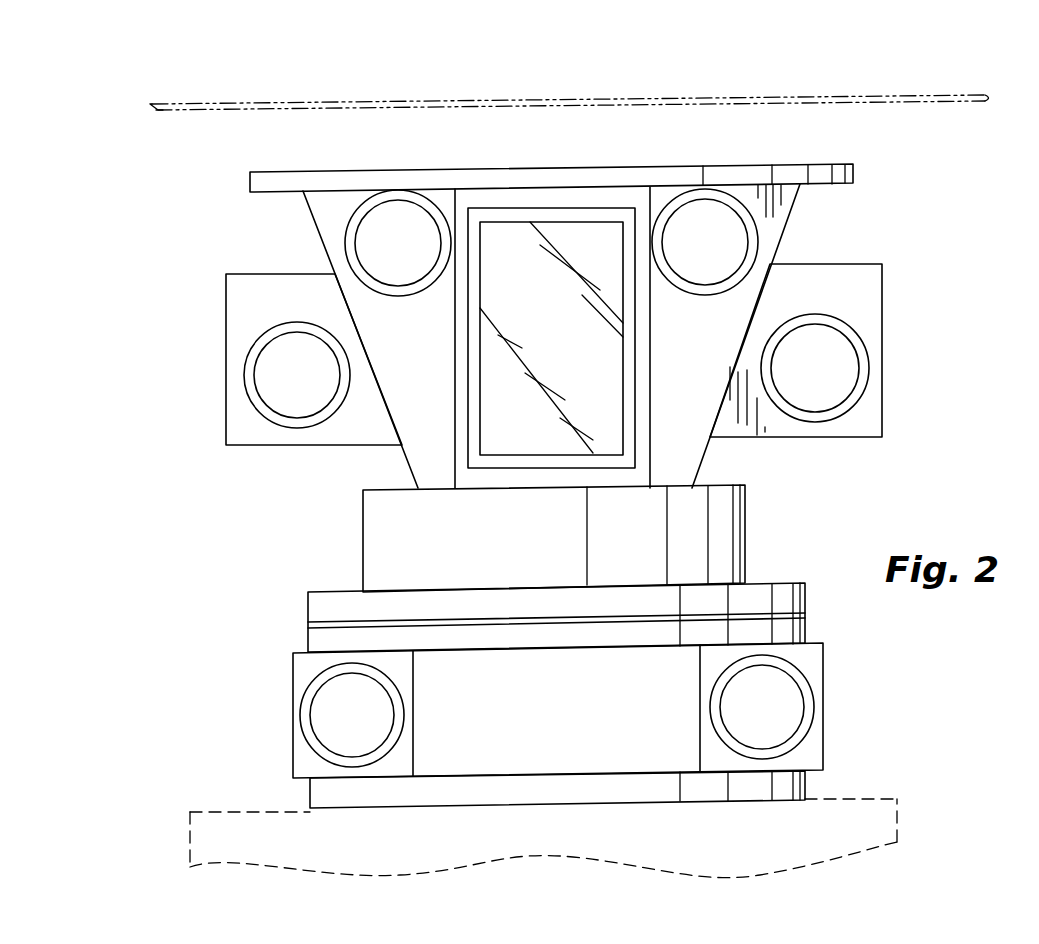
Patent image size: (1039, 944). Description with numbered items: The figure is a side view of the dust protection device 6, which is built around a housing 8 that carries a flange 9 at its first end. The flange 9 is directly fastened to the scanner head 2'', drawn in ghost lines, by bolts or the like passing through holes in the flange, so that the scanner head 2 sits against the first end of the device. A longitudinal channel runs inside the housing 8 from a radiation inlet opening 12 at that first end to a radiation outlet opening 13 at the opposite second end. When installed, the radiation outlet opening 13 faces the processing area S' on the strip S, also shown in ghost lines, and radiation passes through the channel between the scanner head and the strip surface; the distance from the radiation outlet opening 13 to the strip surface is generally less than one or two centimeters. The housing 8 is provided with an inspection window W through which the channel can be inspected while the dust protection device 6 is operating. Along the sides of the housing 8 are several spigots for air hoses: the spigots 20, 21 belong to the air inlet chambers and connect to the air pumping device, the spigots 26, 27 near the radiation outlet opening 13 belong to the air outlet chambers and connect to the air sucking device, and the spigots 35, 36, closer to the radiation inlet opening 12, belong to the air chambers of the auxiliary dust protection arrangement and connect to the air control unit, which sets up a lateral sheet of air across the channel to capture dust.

The scanner head 2 is at (146, 879).
The scanner head 2'' is at (178, 837).
The dust protection device 6 is at (172, 181).
The housing 8 is at (428, 463).
The flange 9 is at (318, 795).
The radiation inlet opening 12 is at (505, 805).
The radiation outlet opening 13 is at (543, 169).
The spigot 20 is at (240, 370).
The spigot 21 is at (862, 340).
The spigot 26 is at (348, 232).
The spigot 27 is at (760, 243).
The spigot 35 is at (307, 697).
The spigot 36 is at (812, 706).
The inspection window W is at (603, 402).
The strip S is at (569, 73).
The processing area S' is at (470, 80).